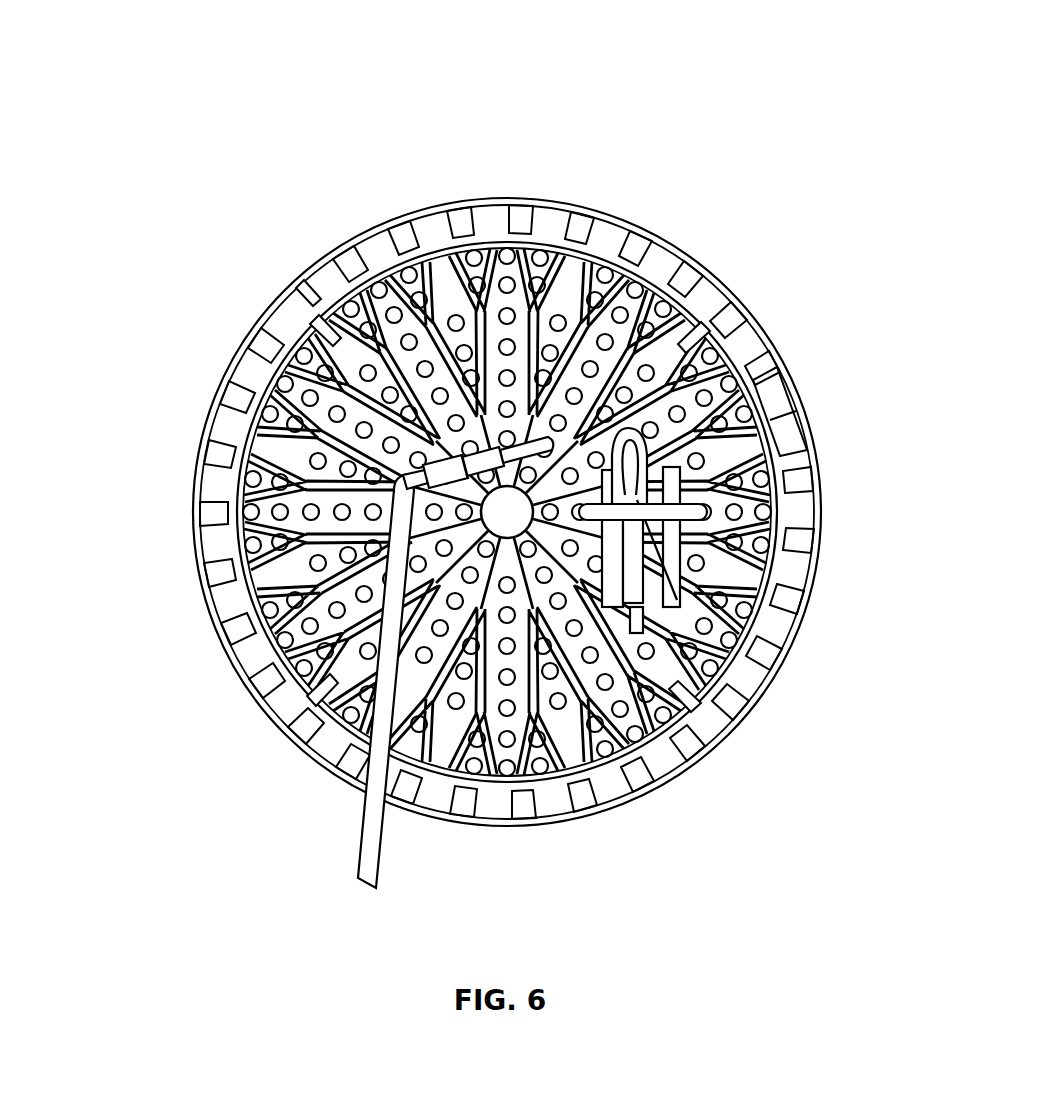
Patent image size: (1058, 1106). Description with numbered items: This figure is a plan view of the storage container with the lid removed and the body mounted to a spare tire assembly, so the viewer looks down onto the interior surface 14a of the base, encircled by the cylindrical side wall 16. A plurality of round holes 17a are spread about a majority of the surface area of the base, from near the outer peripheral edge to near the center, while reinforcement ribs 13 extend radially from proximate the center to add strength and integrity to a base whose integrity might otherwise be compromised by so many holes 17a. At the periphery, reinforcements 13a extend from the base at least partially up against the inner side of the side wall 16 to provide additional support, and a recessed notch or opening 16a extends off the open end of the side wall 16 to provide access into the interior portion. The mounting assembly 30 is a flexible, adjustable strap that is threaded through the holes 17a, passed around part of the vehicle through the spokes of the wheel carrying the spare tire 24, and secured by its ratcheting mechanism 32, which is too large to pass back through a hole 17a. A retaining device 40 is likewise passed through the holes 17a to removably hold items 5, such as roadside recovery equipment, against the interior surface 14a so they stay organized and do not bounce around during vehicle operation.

The items 5 is at (690, 437).
The reinforcement ribs 13 is at (408, 340).
The reinforcements 13a is at (265, 335).
The interior surface 14a is at (303, 282).
The wall 16 is at (812, 450).
The opening 16a is at (497, 782).
The holes 17a is at (590, 214).
The spare tire 24 is at (661, 238).
The mounting assembly 30 is at (365, 855).
The ratcheting mechanism 32 is at (491, 452).
The retaining device 40 is at (690, 570).